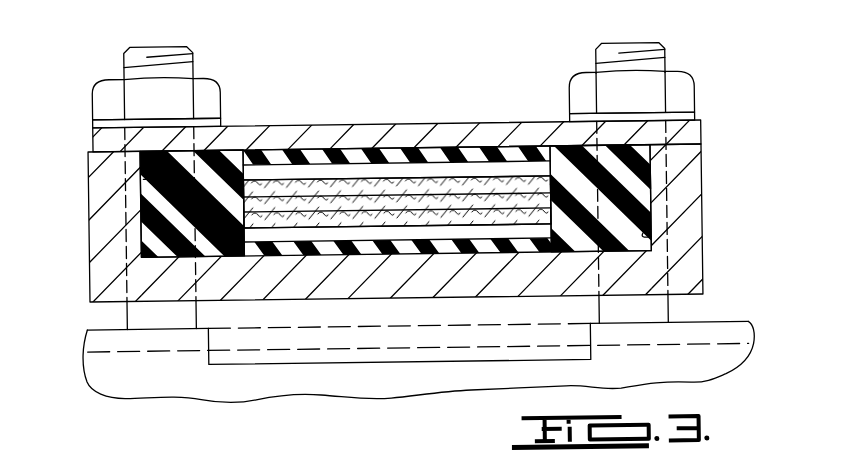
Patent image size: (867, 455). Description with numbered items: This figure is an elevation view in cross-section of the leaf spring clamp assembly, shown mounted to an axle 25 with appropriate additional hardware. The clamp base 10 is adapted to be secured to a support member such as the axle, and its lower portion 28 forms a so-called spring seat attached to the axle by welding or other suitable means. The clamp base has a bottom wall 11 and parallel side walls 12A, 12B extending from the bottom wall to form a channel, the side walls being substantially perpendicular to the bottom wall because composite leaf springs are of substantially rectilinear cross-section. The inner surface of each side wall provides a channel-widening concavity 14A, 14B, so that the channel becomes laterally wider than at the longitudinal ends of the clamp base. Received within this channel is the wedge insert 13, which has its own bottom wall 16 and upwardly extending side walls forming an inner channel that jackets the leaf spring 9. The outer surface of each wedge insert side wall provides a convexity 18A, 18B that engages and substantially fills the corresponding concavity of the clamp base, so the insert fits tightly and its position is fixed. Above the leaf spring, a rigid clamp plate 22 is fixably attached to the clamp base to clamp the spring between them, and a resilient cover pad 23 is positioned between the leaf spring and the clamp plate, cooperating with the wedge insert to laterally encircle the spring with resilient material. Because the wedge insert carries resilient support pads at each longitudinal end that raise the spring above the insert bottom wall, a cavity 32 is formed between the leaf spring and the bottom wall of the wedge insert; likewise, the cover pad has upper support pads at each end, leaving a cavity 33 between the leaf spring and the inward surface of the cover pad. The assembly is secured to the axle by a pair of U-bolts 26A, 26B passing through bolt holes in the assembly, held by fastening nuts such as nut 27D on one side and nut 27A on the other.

The leaf spring 9 is at (430, 186).
The clamp base 10 is at (419, 235).
The bottom wall 11 is at (338, 258).
The side wall 12A is at (697, 200).
The side wall 12B is at (100, 210).
The wedge insert 13 is at (652, 188).
The channel-widening concavity 14A is at (652, 244).
The channel-widening concavity 14B is at (148, 175).
The bottom wall 16 is at (284, 240).
The convexity 18A is at (656, 219).
The convexity 18B is at (143, 230).
The clamp plate 22 is at (690, 138).
The cover pad 23 is at (296, 153).
The axle 25 is at (737, 330).
The U-bolt 26A is at (147, 50).
The U-bolt 26B is at (652, 50).
The fastening nut 27A is at (688, 90).
The fastening nut 27D is at (220, 94).
The lower portion of the clamp base 28 is at (382, 360).
The cavity 32 is at (453, 246).
The cavity 33 is at (380, 172).